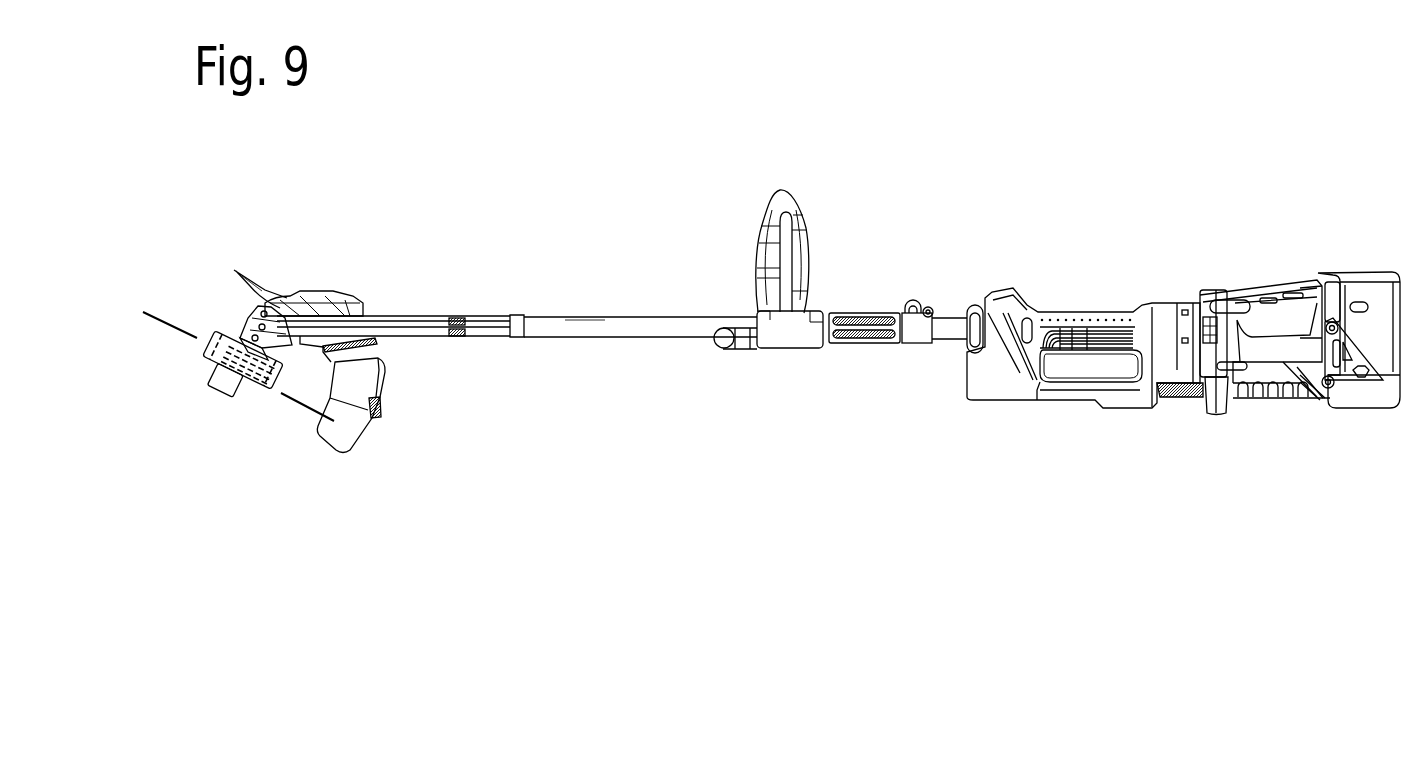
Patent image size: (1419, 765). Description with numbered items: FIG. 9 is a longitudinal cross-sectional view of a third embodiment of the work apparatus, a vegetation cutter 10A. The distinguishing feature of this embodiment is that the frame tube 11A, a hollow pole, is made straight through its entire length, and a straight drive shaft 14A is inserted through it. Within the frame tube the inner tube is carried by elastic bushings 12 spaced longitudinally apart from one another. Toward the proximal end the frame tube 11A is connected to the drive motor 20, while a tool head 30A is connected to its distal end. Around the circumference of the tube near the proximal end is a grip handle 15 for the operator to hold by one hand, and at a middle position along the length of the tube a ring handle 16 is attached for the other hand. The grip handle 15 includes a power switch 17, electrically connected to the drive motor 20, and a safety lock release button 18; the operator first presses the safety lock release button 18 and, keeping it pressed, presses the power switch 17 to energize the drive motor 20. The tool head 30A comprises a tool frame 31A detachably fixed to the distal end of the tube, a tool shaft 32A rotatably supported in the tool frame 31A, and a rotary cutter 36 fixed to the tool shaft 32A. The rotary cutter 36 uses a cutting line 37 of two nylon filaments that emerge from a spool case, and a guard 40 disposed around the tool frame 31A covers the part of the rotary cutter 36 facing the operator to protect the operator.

The vegetation cutter 10A is at (1083, 330).
The frame tube 11A is at (623, 317).
The bushings 12 is at (463, 338).
The drive shaft 14A is at (420, 325).
The grip handle 15 is at (1067, 317).
The ring handle 16 is at (795, 242).
The power switch 17 is at (1063, 352).
The safety lock release button 18 is at (1022, 357).
The drive motor 20 is at (1250, 320).
The tool head 30A is at (222, 266).
The tool frame 31A is at (257, 310).
The tool shaft 32A is at (257, 327).
The rotary cutter 36 is at (203, 357).
The cutting line 37 is at (160, 320).
The guard 40 is at (386, 388).